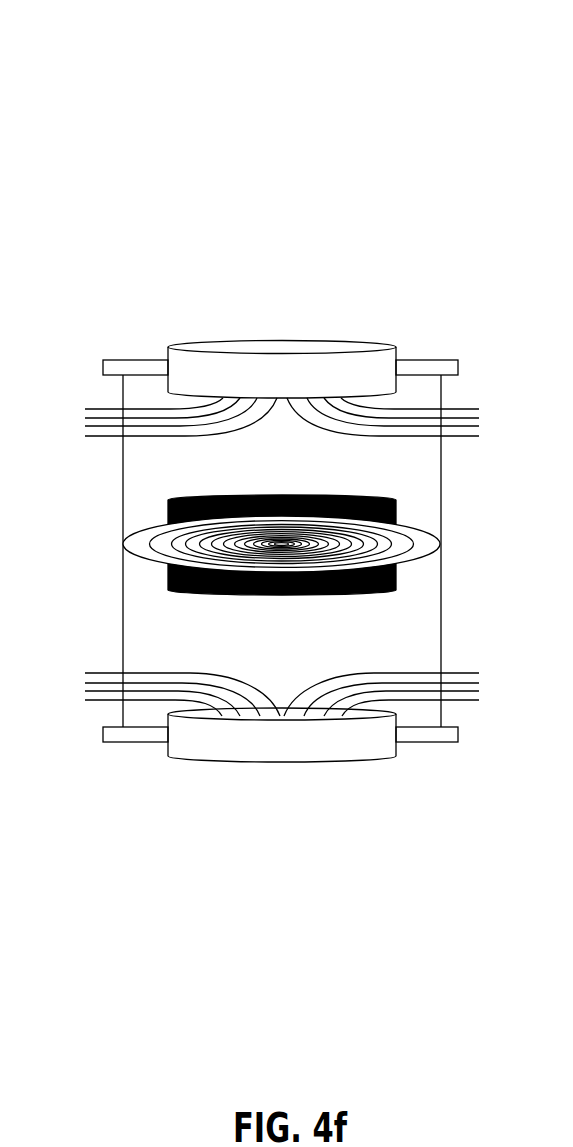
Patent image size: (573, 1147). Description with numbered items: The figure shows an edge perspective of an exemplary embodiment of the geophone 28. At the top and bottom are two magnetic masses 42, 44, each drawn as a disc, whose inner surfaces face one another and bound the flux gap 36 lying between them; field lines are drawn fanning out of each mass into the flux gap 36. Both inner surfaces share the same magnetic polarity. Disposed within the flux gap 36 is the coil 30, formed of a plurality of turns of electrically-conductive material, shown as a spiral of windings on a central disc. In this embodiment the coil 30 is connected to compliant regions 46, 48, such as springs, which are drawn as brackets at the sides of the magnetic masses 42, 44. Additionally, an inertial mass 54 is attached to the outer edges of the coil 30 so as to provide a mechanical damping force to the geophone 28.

The geophone 28 is at (322, 44).
The coil 30 is at (421, 527).
The flux gap 36 is at (460, 399).
The magnetic mass 42 is at (360, 341).
The magnetic mass 44 is at (380, 760).
The compliant region 46 is at (450, 358).
The compliant region 48 is at (458, 733).
The inertial mass 54 is at (168, 516).